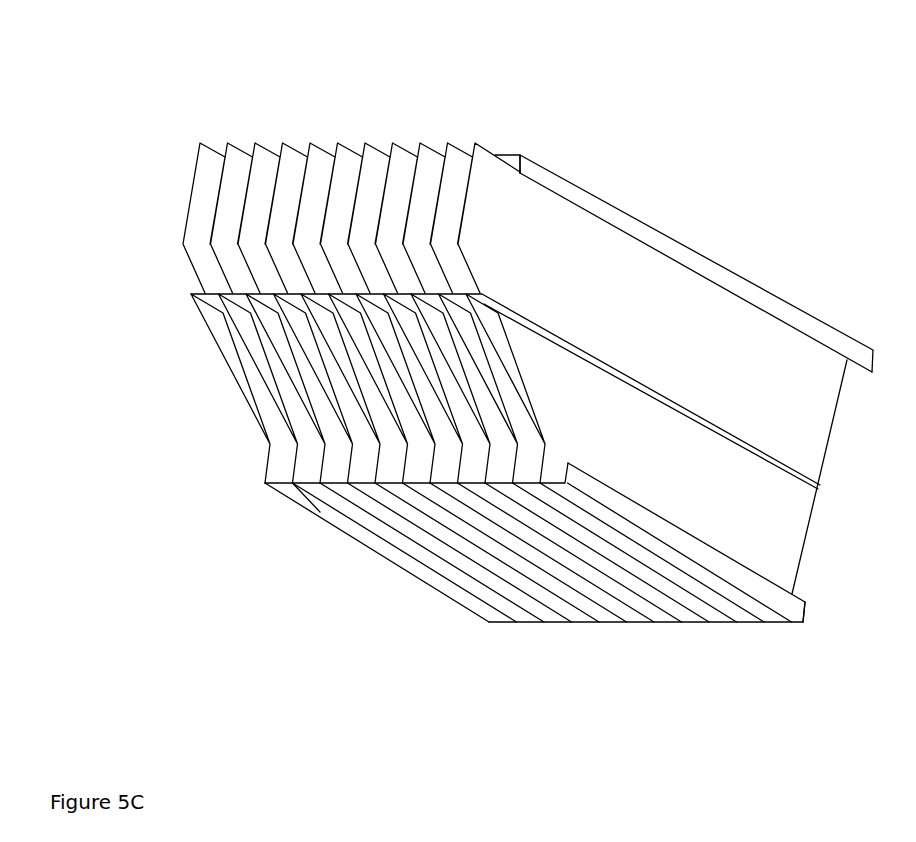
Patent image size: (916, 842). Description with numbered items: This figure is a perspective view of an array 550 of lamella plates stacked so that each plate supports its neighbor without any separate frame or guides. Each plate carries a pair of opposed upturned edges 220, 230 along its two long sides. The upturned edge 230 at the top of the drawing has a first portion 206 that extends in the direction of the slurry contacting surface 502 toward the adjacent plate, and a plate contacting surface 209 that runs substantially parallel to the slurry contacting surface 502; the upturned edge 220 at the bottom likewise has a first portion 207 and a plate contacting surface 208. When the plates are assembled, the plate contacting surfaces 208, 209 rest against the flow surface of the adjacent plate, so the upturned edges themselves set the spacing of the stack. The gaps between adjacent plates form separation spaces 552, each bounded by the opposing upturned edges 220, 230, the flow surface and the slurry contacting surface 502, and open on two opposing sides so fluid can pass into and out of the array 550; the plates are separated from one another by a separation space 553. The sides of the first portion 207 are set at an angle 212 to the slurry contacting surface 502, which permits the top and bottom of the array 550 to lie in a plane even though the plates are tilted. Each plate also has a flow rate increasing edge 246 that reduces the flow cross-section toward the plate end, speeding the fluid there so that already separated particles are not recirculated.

The array of lamella plates 550 is at (317, 66).
The separation space 553 is at (220, 192).
The first portion 206 is at (504, 160).
The upturned edge 230 is at (644, 210).
The plate contacting surface 209 is at (717, 268).
The slurry contacting surface 502 is at (736, 360).
The separation space 552 is at (213, 333).
The flow rate increasing edge 246 is at (522, 398).
The angle 212 is at (321, 498).
The upturned edge 220 is at (813, 578).
The plate contacting surface 208 is at (808, 614).
The first portion 207 is at (786, 626).